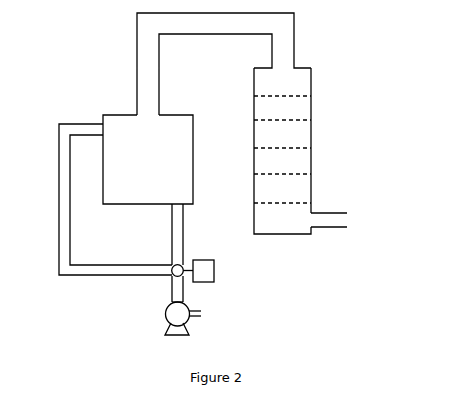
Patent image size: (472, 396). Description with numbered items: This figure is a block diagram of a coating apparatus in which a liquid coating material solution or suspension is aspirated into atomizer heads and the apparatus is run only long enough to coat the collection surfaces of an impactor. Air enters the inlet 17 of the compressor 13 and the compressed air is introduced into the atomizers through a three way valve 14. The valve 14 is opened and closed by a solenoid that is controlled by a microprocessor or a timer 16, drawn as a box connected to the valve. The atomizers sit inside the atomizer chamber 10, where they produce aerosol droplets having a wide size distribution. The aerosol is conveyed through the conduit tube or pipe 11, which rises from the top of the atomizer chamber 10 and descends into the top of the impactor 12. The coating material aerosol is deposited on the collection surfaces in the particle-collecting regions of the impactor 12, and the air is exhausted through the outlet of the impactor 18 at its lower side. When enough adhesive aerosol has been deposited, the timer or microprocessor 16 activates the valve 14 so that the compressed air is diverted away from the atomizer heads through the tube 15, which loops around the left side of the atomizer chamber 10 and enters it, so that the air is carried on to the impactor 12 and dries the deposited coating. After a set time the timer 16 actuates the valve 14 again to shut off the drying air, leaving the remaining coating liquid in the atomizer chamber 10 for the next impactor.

The atomizer chamber 10 is at (195, 165).
The conduit tube or pipe 11 is at (195, 36).
The impactor 12 is at (312, 128).
The compressor 13 is at (162, 320).
The three way valve 14 is at (181, 265).
The tube 15 is at (72, 215).
The timer 16 is at (214, 272).
The inlet 17 is at (203, 314).
The outlet of the impactor 18 is at (349, 218).